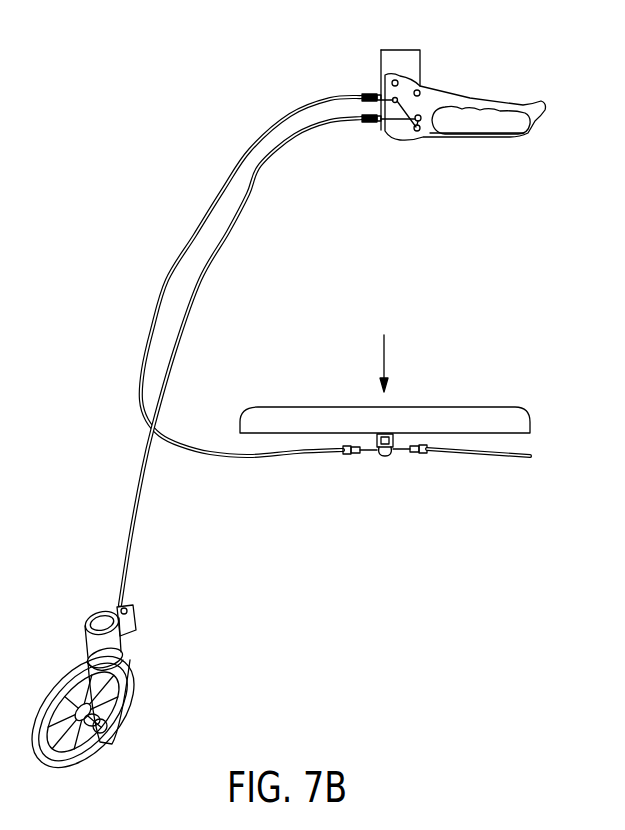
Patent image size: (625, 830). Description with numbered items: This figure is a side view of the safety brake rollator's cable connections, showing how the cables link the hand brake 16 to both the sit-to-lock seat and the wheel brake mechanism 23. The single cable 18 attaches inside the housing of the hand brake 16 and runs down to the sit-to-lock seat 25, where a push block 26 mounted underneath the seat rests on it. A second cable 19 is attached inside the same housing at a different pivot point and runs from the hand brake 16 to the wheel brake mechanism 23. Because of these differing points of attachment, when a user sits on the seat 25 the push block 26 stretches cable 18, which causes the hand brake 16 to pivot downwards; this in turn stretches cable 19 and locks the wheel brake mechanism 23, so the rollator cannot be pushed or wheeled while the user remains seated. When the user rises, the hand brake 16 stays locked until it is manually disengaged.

The hand brake 16 is at (475, 66).
The cable 18 is at (223, 191).
The cable 19 is at (250, 194).
The wheel brake mechanism 23 is at (165, 647).
The seat 25 is at (343, 420).
The push block 26 is at (393, 450).